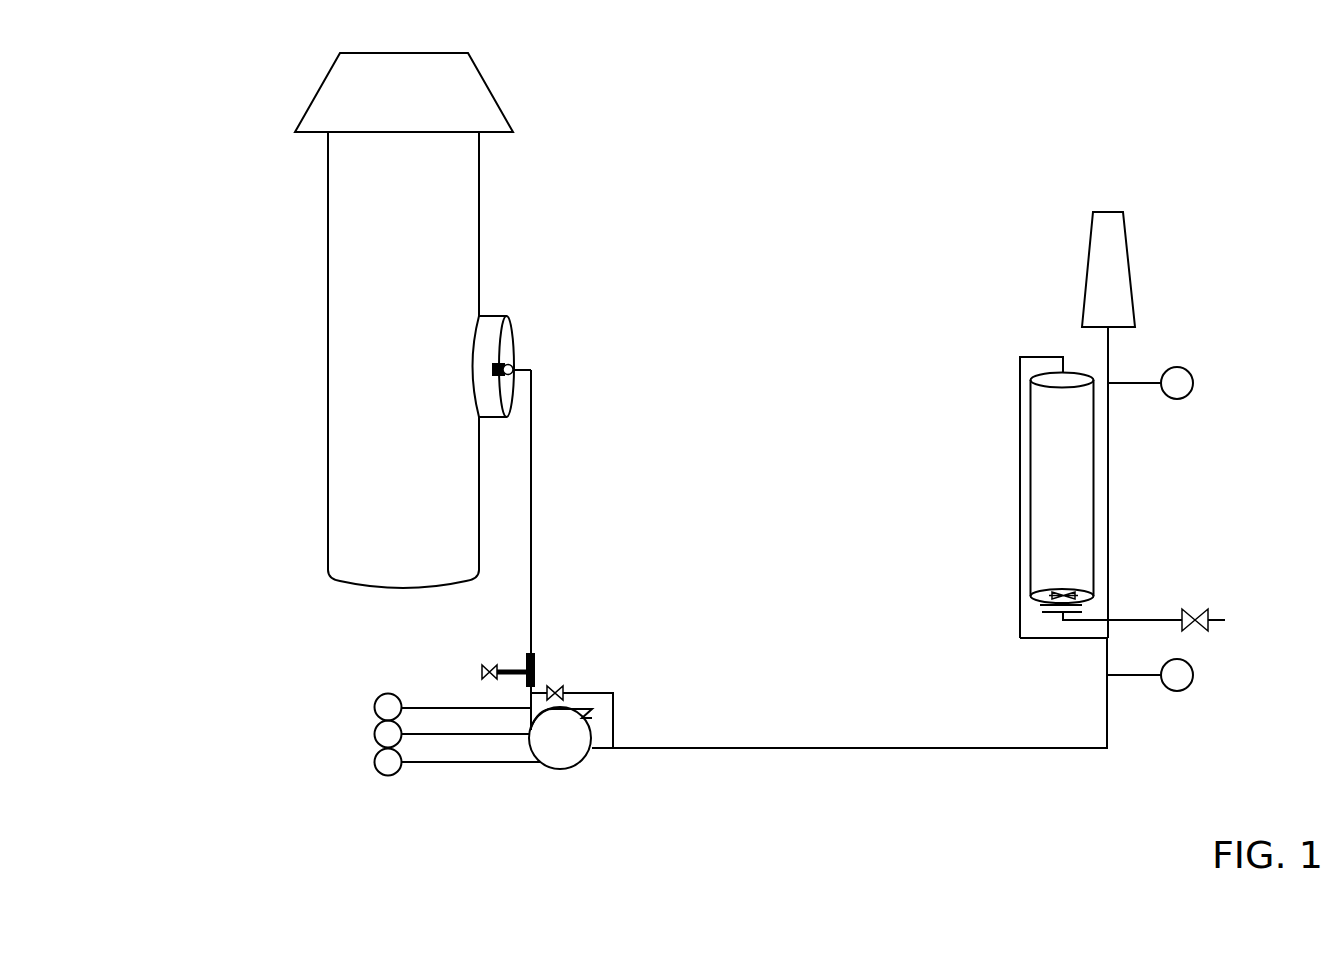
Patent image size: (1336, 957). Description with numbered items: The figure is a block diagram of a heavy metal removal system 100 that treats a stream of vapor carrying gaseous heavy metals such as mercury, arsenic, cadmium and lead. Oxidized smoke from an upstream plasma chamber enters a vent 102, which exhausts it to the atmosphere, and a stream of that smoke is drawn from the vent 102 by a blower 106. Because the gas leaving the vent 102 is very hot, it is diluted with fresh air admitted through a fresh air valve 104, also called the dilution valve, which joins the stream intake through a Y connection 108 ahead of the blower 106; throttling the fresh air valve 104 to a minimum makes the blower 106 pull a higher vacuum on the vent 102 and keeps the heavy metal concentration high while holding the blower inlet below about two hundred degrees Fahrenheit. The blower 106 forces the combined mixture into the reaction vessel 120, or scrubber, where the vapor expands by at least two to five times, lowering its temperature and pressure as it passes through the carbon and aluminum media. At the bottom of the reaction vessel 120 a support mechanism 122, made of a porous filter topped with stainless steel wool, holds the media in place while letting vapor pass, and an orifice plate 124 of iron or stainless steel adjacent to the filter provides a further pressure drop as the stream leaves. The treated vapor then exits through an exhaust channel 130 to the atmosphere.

The heavy metal removal system 100 is at (237, 102).
The vent 102 is at (479, 222).
The fresh air valve 104 is at (486, 667).
The blower 106 is at (578, 762).
The Y connection 108 is at (535, 668).
The reaction vessel 120 is at (1030, 470).
The support mechanism 122 is at (1035, 597).
The orifice plate 124 is at (1040, 612).
The exhaust channel 130 is at (1087, 263).